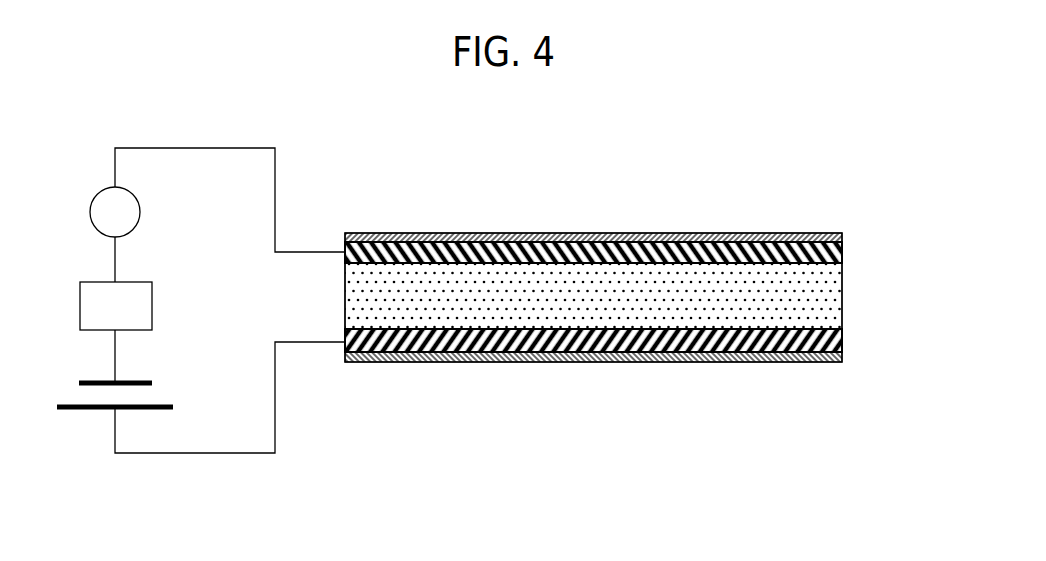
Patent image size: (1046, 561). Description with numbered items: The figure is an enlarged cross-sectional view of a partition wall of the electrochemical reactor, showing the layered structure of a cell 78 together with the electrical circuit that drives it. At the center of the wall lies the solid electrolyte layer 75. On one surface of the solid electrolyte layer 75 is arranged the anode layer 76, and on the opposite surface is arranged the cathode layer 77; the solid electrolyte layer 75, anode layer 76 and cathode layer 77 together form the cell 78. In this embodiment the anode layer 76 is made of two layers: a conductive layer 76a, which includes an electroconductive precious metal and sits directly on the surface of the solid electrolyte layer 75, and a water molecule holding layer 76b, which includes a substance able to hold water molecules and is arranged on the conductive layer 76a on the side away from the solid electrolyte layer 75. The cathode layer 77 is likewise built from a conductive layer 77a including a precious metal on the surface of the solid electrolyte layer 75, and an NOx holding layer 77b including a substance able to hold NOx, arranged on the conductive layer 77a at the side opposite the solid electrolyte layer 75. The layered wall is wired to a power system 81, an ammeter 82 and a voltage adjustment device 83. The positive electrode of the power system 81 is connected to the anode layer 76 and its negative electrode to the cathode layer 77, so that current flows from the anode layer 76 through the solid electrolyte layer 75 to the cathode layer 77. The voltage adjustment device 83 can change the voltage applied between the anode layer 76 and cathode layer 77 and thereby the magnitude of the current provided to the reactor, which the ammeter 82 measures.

The solid electrolyte layer 75 is at (842, 296).
The anode layer 76 is at (624, 390).
The conductive layer 76a is at (740, 355).
The water molecule holding layer 76b is at (675, 357).
The cathode layer 77 is at (624, 207).
The conductive layer 77a is at (650, 250).
The NOx holding layer 77b is at (772, 232).
The cell 78 is at (653, 301).
The power system 81 is at (97, 412).
The ammeter 82 is at (97, 190).
The voltage adjustment device 83 is at (102, 283).